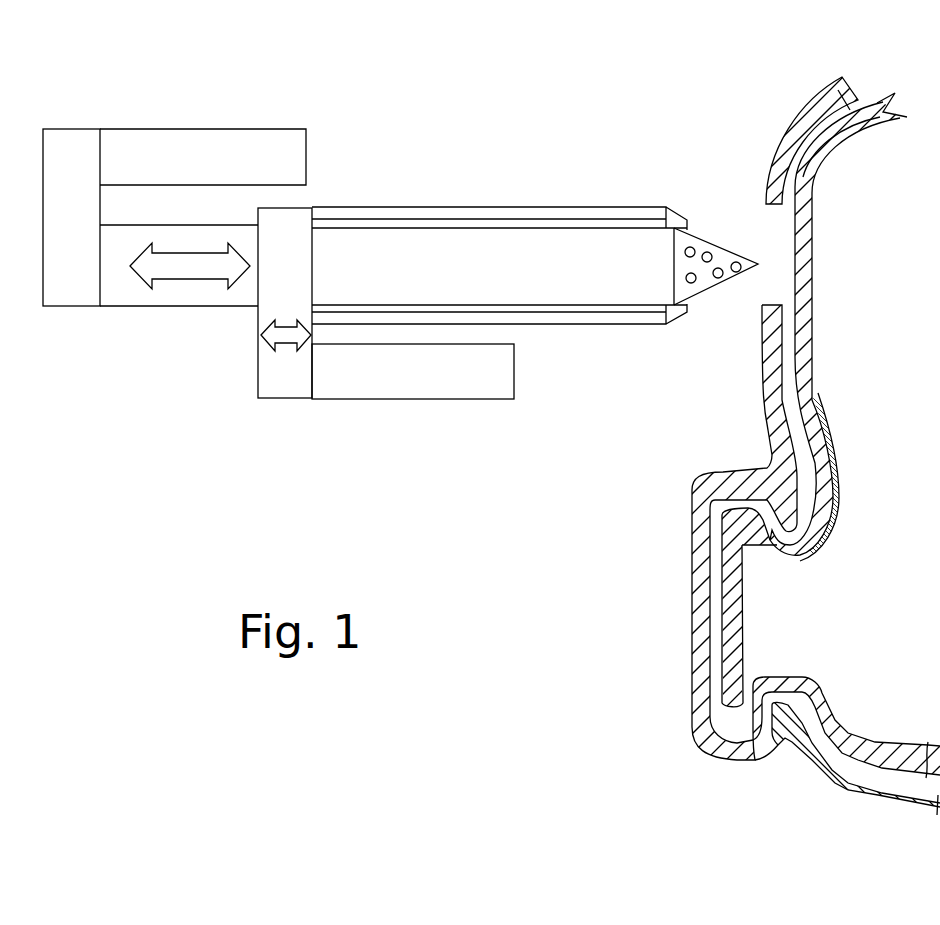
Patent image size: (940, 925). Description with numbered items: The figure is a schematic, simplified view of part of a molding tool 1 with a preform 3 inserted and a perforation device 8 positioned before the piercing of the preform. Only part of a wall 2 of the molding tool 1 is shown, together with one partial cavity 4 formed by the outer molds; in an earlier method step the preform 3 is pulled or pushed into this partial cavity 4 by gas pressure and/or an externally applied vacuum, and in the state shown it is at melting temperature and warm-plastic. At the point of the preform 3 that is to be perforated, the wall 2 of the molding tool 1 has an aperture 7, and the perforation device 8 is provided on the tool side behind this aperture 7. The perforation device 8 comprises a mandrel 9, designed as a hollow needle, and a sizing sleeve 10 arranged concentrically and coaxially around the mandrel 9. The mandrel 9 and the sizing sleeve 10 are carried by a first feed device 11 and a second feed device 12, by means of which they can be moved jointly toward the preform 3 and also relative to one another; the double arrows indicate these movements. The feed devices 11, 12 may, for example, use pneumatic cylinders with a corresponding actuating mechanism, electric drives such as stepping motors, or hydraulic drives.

The molding tool 1 is at (791, 113).
The wall 2 is at (735, 757).
The preform 3 is at (812, 258).
The partial cavity 4 is at (873, 402).
The aperture 7 is at (745, 220).
The perforation device 8 is at (292, 127).
The mandrel 9 is at (628, 293).
The sizing sleeve 10 is at (550, 207).
The first feed device 11 is at (300, 130).
The second feed device 12 is at (370, 397).